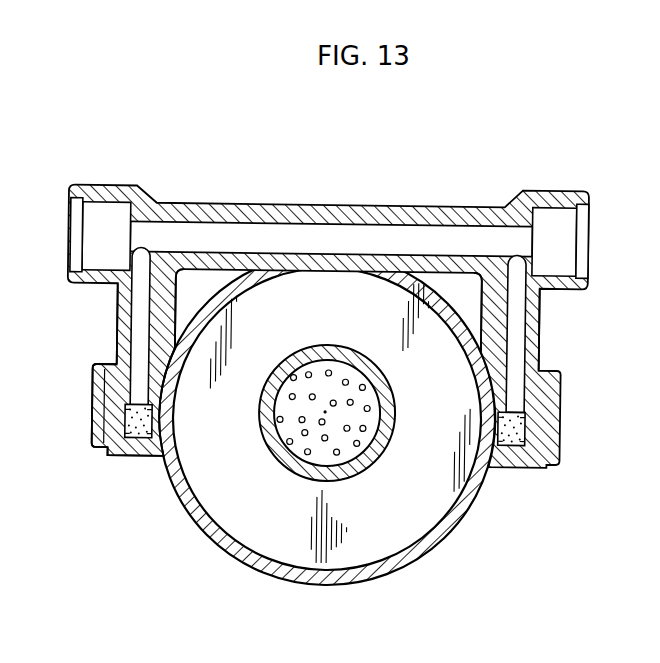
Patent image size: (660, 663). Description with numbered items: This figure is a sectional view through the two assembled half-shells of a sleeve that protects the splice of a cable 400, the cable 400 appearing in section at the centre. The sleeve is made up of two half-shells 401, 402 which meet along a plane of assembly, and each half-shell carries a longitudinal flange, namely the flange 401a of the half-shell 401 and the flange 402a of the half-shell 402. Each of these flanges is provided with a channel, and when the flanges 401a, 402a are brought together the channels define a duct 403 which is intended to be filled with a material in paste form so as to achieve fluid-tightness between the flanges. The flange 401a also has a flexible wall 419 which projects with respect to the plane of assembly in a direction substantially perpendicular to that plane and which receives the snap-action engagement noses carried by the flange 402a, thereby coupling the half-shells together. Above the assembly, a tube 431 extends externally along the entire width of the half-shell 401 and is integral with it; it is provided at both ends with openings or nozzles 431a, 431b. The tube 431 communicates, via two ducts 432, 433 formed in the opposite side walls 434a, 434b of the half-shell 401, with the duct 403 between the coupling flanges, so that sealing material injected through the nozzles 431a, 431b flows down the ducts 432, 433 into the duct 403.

The cable 400 is at (383, 375).
The half-shell 401 is at (116, 293).
The longitudinal flange of the half-shell 401a is at (103, 410).
The half-shell 402 is at (424, 547).
The longitudinal flange of the half-shell 402a is at (172, 408).
The duct 403 is at (138, 440).
The flexible wall 419 is at (96, 384).
The tube 431 is at (302, 217).
The opening or nozzle 431a is at (563, 192).
The opening or nozzle 431b is at (107, 186).
The duct 432 is at (514, 330).
The duct 433 is at (138, 328).
The side wall 434a is at (480, 302).
The side wall 434b is at (160, 313).